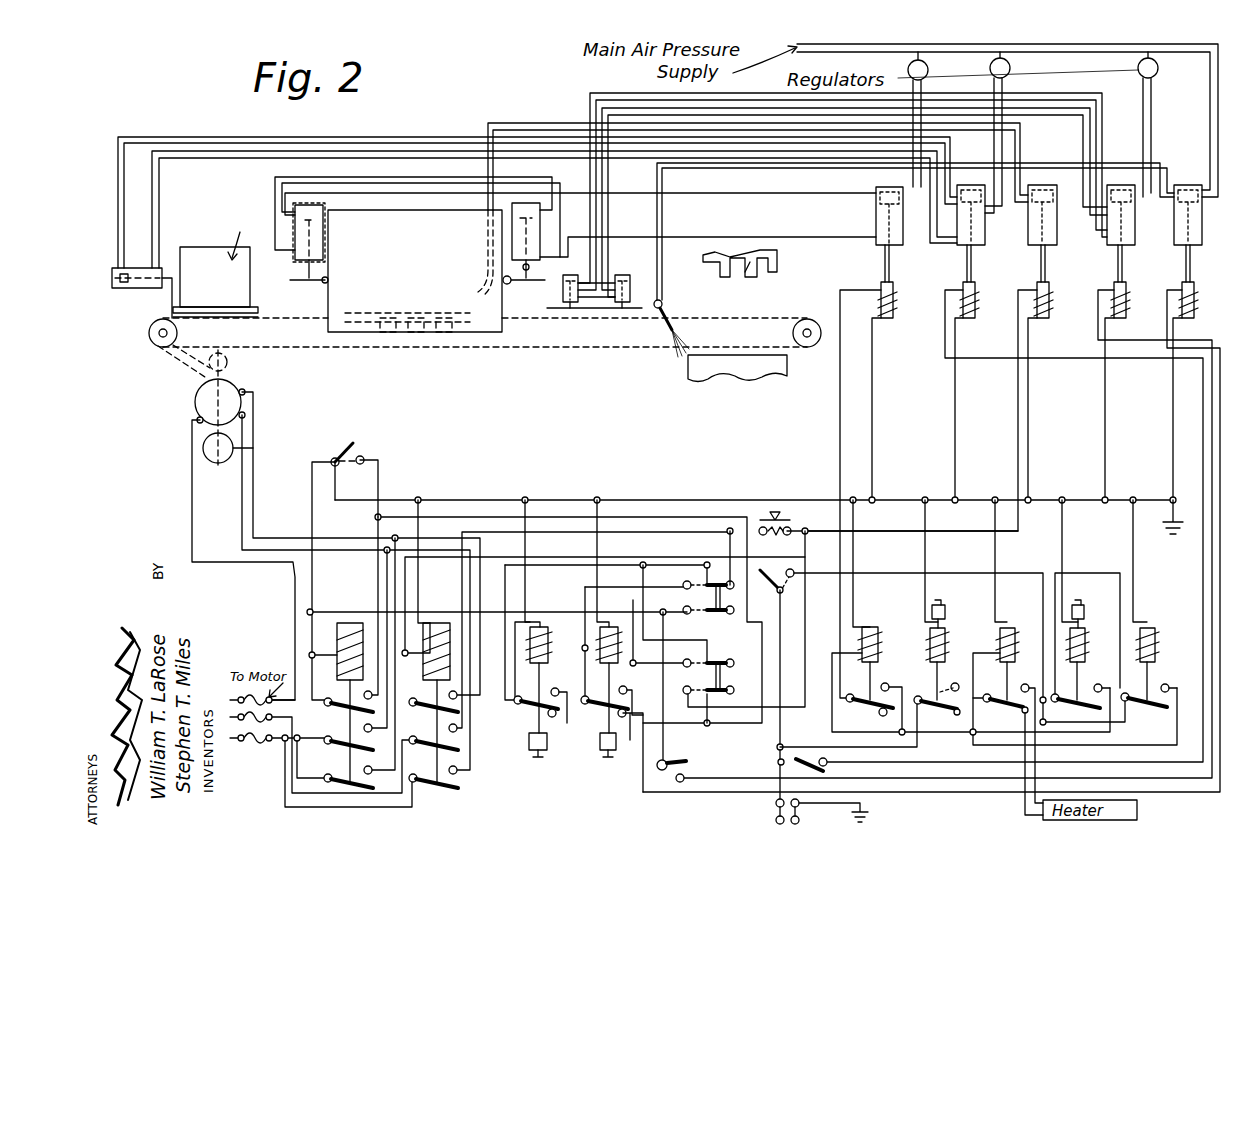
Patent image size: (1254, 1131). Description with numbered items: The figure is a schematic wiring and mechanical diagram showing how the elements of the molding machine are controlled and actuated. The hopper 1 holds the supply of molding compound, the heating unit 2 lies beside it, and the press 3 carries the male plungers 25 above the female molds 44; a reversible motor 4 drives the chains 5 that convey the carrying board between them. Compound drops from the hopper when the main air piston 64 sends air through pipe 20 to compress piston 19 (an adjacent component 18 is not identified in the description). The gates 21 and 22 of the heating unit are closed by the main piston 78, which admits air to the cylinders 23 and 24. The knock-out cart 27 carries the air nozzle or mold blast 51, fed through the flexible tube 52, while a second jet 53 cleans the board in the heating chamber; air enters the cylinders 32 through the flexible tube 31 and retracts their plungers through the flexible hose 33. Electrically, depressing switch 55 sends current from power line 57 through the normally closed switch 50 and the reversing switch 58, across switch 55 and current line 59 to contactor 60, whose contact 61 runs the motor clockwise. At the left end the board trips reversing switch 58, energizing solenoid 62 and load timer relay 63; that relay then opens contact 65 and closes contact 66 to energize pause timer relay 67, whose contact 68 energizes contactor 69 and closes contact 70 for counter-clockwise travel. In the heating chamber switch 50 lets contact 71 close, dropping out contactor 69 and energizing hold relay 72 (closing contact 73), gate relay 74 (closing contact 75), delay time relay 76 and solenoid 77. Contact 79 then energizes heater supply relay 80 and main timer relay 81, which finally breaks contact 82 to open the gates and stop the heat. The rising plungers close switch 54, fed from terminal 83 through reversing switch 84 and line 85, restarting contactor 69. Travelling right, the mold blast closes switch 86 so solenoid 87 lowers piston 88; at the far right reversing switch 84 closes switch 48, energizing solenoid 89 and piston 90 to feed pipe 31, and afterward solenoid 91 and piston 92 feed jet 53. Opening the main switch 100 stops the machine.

The hopper 1 is at (255, 275).
The heating unit 2 is at (408, 271).
The press 3 is at (787, 262).
The reversible motor 4 is at (205, 401).
The chains 5 is at (296, 340).
The feed valve box 18 is at (126, 289).
The piston 19 is at (130, 275).
The pipe 20 is at (117, 257).
The gate 21 is at (305, 293).
The gate 22 is at (524, 292).
The cylinder 23 is at (323, 229).
The cylinder 24 is at (512, 238).
The male plungers 25 is at (745, 273).
The knock-out cart 27 is at (645, 272).
The flexible tube 31 is at (590, 110).
The cylinders 32 is at (583, 274).
The flexible hose 33 is at (608, 220).
The female molds 44 is at (787, 373).
The switch 48 is at (808, 757).
The switch 50 is at (773, 686).
The air nozzle 51 is at (663, 305).
The flexible tube 52 is at (663, 282).
The air jet 53 is at (486, 294).
The switch 54 is at (345, 446).
The switch 55 is at (778, 519).
The power line 57 is at (778, 765).
The reversing switch 58 is at (722, 597).
The current line 59 is at (709, 562).
The contactor 60 is at (432, 672).
The contact 61 is at (445, 726).
The solenoid 62 is at (975, 288).
The load timer relay 63 is at (609, 662).
The main air piston 64 is at (972, 192).
The contact 65 is at (630, 725).
The contact 66 is at (630, 692).
The pause timer relay 67 is at (548, 655).
The contact 68 is at (557, 690).
The contactor 69 is at (345, 665).
The contact 70 is at (371, 772).
The contact 71 is at (797, 576).
The hold relay 72 is at (1153, 626).
The contact 73 is at (1167, 686).
The gate relay 74 is at (880, 626).
The contact 75 is at (896, 677).
The delay time relay 76 is at (1090, 624).
The solenoid 77 is at (893, 288).
The main piston 78 is at (876, 208).
The contact 79 is at (1104, 678).
The heater supply relay 80 is at (1013, 622).
The main timer relay 81 is at (950, 622).
The contact 82 is at (955, 713).
The terminal 83 is at (660, 553).
The reversing switch 84 is at (724, 677).
The line 85 is at (694, 515).
The switch 86 is at (674, 762).
The solenoid 87 is at (1182, 284).
The piston 88 is at (1192, 186).
The solenoid 89 is at (1126, 284).
The piston 90 is at (1133, 214).
The solenoid 91 is at (1049, 288).
The piston 92 is at (1053, 212).
The main switch 100 is at (800, 812).